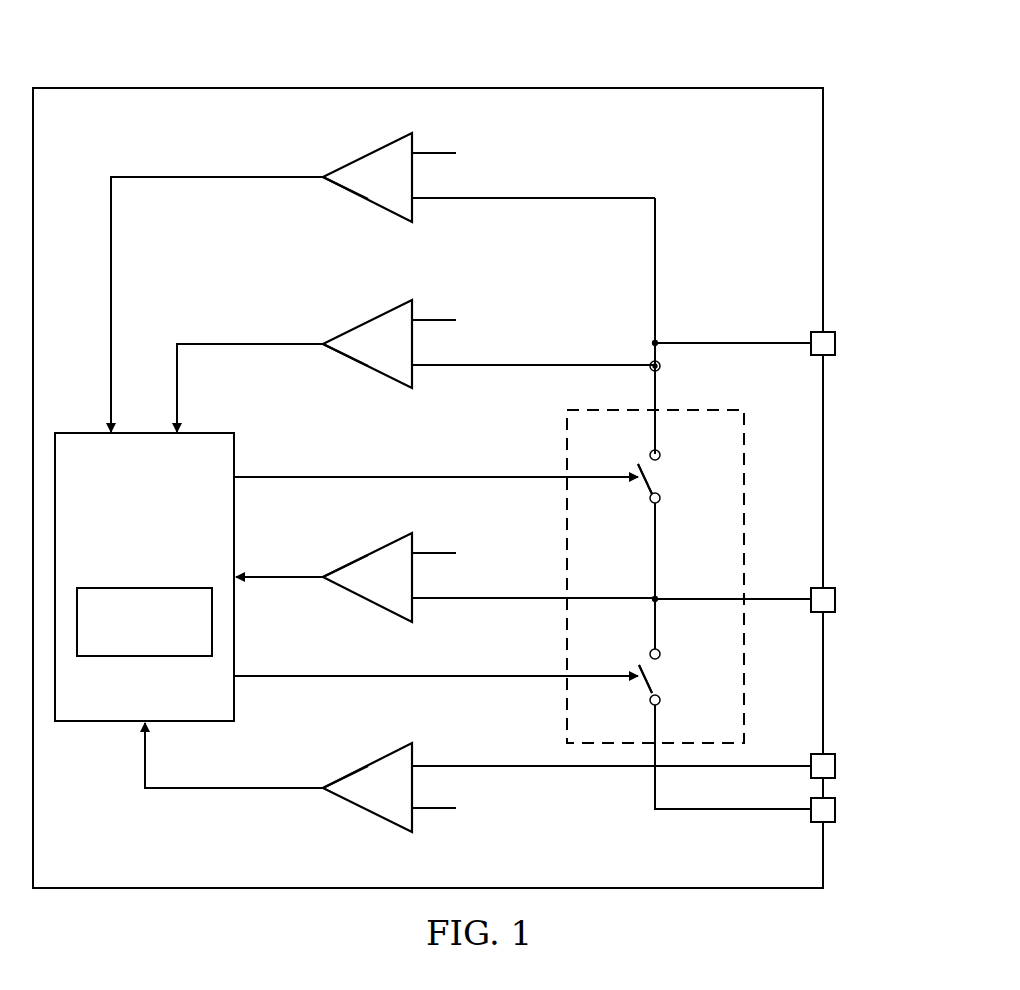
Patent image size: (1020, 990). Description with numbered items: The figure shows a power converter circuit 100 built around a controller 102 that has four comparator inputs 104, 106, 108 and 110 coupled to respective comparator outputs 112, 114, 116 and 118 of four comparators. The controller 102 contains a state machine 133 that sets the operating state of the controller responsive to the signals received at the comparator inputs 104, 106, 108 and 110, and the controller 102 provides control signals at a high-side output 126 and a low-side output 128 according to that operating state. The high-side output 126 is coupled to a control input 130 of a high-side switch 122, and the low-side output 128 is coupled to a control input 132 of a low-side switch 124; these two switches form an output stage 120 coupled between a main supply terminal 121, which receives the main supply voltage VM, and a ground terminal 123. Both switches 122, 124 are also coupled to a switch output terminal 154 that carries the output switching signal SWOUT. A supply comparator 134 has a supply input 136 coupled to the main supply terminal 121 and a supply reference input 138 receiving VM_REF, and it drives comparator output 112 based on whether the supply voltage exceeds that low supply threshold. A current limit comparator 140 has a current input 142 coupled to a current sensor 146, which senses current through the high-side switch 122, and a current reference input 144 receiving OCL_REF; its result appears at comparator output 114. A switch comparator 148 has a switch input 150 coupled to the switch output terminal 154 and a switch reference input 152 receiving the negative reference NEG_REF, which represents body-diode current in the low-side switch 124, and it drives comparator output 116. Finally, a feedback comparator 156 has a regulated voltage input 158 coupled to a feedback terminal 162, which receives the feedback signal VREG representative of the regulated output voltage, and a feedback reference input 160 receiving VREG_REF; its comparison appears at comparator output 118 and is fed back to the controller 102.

The power converter circuit 100 is at (220, 86).
The controller 102 is at (144, 577).
The comparator input 104 is at (108, 408).
The comparator input 106 is at (180, 410).
The comparator input 108 is at (252, 575).
The comparator input 110 is at (142, 745).
The comparator output 112 is at (318, 172).
The comparator output 114 is at (318, 338).
The comparator output 116 is at (320, 586).
The comparator output 118 is at (320, 796).
The output stage 120 is at (564, 444).
The main supply terminal 121 is at (829, 331).
The high-side switch 122 is at (650, 481).
The ground terminal 123 is at (829, 823).
The low-side switch 124 is at (650, 682).
The high-side output 126 is at (238, 470).
The low-side output 128 is at (238, 682).
The control input 130 is at (624, 473).
The control input 132 is at (633, 680).
The state machine 133 is at (145, 657).
The supply comparator 134 is at (365, 203).
The supply input 136 is at (417, 203).
The supply reference input 138 is at (417, 145).
The current limit comparator 140 is at (365, 370).
The current input 142 is at (417, 370).
The current reference input 144 is at (417, 312).
The current sensor 146 is at (661, 369).
The switch comparator 148 is at (363, 556).
The switch input 150 is at (417, 603).
The switch reference input 152 is at (417, 545).
The switch output terminal 154 is at (829, 587).
The feedback comparator 156 is at (365, 766).
The regulated voltage input 158 is at (417, 757).
The feedback reference input 160 is at (417, 835).
The feedback terminal 162 is at (829, 753).